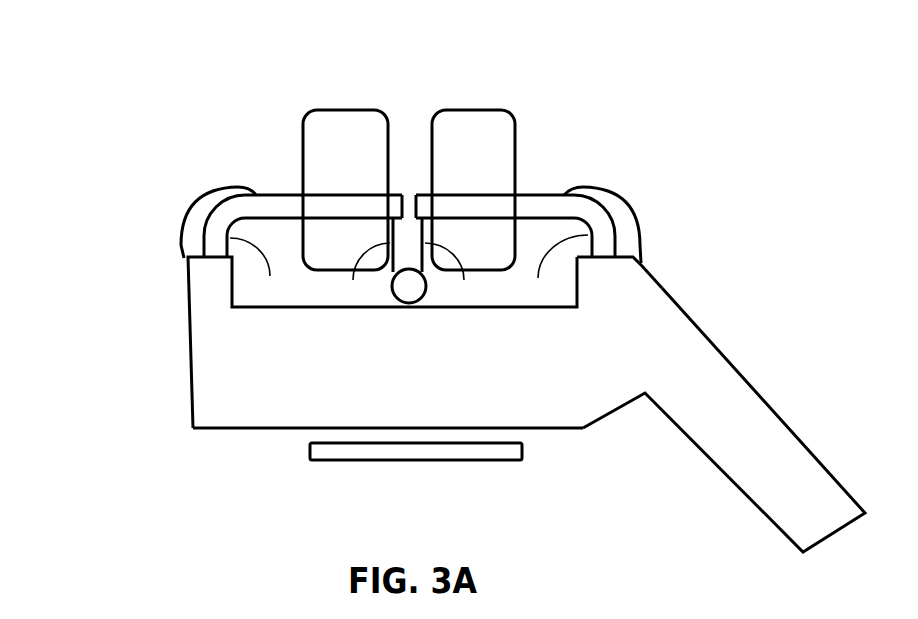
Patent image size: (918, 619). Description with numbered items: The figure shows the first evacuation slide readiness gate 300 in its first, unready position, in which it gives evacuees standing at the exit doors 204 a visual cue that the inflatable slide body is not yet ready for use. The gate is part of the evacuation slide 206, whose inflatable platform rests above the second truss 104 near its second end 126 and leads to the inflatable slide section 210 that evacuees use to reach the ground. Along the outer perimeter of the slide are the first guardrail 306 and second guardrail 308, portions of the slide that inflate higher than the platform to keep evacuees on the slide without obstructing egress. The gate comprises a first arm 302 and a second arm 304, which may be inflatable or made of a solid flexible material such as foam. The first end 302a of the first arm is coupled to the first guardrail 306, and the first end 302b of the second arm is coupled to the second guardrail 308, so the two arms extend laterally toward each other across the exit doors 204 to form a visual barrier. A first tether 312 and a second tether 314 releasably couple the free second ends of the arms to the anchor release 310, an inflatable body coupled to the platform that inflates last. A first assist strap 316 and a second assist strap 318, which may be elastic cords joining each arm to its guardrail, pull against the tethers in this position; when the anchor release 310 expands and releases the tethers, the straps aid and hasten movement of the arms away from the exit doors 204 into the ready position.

The first evacuation slide readiness gate 300 is at (144, 200).
The mid-cabin exit doors 204 is at (323, 110).
The first arm 302 is at (273, 193).
The second arm 304 is at (553, 193).
The first end of the first arm 302a is at (265, 273).
The first end of the second arm 302b is at (546, 271).
The first tether 312 is at (361, 263).
The second tether 314 is at (455, 263).
The anchor release 310 is at (394, 293).
The first assist strap 316 is at (181, 229).
The second assist strap 318 is at (634, 222).
The first guardrail 306 is at (188, 297).
The second guardrail 308 is at (635, 283).
The slide section 210 is at (710, 383).
The evacuation slide 206 is at (225, 430).
The second truss 104 is at (343, 462).
The second end of the second truss 126 is at (416, 451).